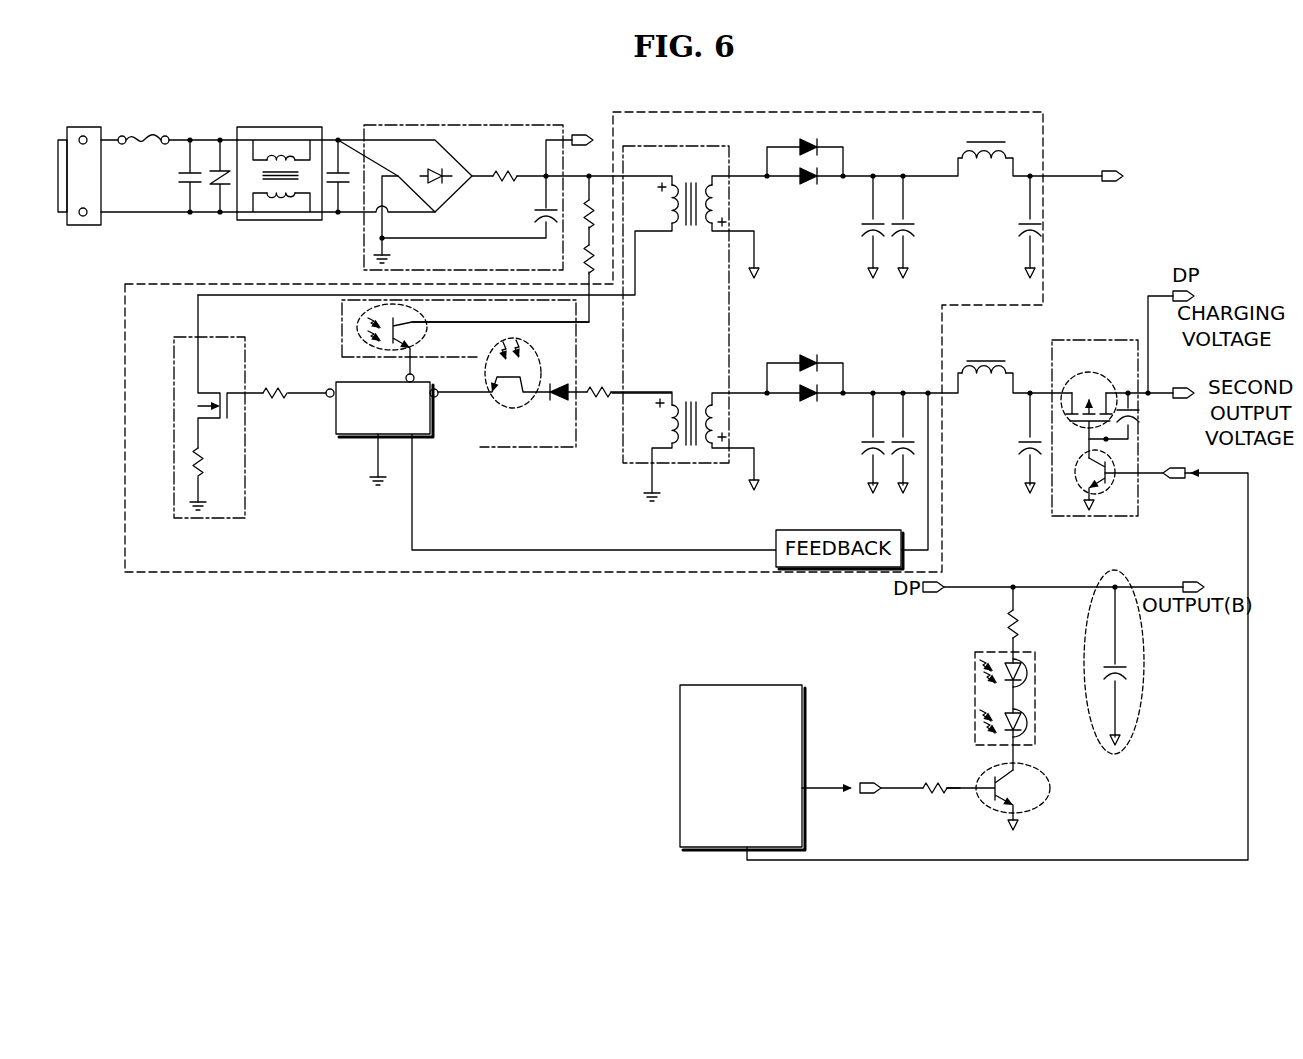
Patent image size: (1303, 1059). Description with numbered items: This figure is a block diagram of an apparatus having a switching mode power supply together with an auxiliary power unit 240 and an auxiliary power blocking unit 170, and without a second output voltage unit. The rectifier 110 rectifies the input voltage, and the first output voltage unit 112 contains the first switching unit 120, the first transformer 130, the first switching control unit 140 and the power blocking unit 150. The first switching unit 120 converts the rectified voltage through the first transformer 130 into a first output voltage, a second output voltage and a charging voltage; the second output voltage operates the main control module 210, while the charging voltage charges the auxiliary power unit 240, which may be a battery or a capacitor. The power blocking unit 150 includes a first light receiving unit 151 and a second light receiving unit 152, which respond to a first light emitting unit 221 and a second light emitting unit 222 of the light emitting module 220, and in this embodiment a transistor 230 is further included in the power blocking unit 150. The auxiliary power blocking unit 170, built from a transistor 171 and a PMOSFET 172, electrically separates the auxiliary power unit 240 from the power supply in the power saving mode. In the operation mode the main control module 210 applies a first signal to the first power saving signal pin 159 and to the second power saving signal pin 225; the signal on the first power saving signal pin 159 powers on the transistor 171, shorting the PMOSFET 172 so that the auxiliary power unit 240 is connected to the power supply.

The rectifier 110 is at (470, 125).
The first output voltage unit 112 is at (882, 112).
The first switching unit 120 is at (182, 337).
The first transformer 130 is at (703, 146).
The first switching control unit 140 is at (423, 434).
The power blocking unit 150 is at (507, 394).
The first light receiving unit 151 is at (513, 410).
The second light receiving unit 152 is at (433, 333).
The first power saving signal pin 159 is at (1183, 478).
The auxiliary power blocking unit 170 is at (1100, 417).
The transistor 171 is at (1080, 465).
The p-type metal oxide semiconductor field effect transistor 172 is at (1110, 366).
The main control module 210 is at (775, 685).
The light emitting module 220 is at (1023, 678).
The first light emitting unit 221 is at (1022, 658).
The second light emitting unit 222 is at (1028, 732).
The second power saving signal pin 225 is at (868, 793).
The transistor 230 is at (985, 770).
The auxiliary power unit 240 is at (1145, 670).